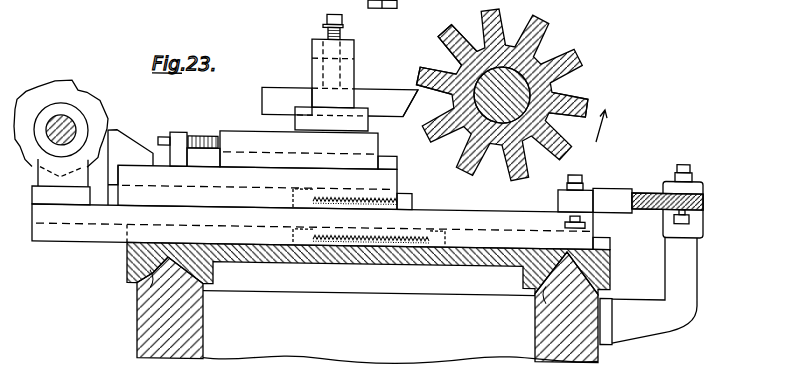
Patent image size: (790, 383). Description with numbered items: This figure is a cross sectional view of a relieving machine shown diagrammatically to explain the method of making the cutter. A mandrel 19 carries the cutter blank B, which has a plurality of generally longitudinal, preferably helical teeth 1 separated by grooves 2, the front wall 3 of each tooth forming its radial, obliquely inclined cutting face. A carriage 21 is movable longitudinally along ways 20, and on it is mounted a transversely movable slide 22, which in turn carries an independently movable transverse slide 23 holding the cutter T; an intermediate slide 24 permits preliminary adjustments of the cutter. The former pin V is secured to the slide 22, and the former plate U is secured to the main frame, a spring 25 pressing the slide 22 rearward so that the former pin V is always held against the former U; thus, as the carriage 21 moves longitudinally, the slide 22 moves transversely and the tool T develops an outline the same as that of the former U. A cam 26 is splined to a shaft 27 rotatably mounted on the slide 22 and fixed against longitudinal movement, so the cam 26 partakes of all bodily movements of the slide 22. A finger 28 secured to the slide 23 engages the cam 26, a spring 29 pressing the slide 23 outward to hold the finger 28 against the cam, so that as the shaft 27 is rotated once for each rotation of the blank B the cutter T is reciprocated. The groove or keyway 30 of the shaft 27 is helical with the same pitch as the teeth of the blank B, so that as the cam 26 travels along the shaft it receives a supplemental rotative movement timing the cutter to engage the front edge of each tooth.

The teeth 1 is at (420, 65).
The grooves 2 is at (447, 53).
The front wall 3 is at (422, 103).
The mandrel 19 is at (556, 84).
The ways 20 is at (138, 304).
The carriage 21 is at (392, 257).
The slide 22 is at (80, 233).
The transverse slide 23 is at (388, 181).
The intermediate slide 24 is at (370, 144).
The spring 25 is at (340, 252).
The cam 26 is at (88, 98).
The shaft 27 is at (77, 129).
The finger 28 is at (125, 140).
The spring 29 is at (322, 205).
The keyway 30 is at (58, 117).
The cutter blank B is at (578, 41).
The cutter T is at (362, 99).
The former plate U is at (645, 187).
The former pin V is at (612, 187).